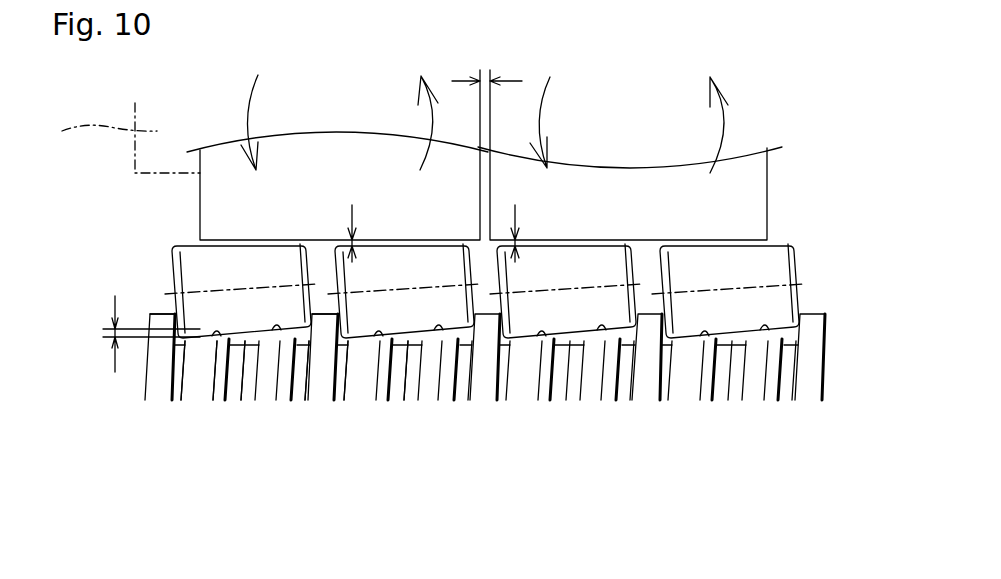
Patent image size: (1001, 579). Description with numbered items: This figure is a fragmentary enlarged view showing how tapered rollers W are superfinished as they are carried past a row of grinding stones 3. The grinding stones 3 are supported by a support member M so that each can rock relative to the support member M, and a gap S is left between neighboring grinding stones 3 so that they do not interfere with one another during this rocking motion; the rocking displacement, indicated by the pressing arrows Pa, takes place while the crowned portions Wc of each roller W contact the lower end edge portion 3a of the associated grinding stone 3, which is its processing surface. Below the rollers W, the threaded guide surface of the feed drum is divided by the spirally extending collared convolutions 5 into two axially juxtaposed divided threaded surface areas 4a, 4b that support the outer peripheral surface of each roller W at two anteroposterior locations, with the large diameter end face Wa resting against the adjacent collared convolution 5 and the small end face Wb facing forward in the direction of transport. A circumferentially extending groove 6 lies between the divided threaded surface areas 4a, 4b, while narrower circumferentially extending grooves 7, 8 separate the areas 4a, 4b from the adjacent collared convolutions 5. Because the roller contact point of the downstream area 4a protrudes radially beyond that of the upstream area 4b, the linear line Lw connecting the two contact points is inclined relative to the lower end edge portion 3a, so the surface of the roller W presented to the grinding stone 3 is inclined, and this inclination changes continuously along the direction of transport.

The support member M is at (119, 138).
The pressing force Pa is at (340, 122).
The gap S is at (488, 70).
The grinding stone 3 is at (362, 155).
The lower end edge portion 3a is at (483, 243).
The roller W is at (222, 280).
The large diameter end face Wa is at (173, 272).
The small end face Wb is at (312, 262).
The crowned portion Wc is at (182, 246).
The circumferentially extending groove 8 is at (173, 335).
The divided threaded surface area 4a is at (293, 337).
The divided threaded surface area 4b is at (195, 345).
The linear line Lw is at (230, 343).
The collared convolution 5 is at (330, 345).
The circumferentially extending groove 6 is at (263, 340).
The circumferentially extending groove 7 is at (323, 340).